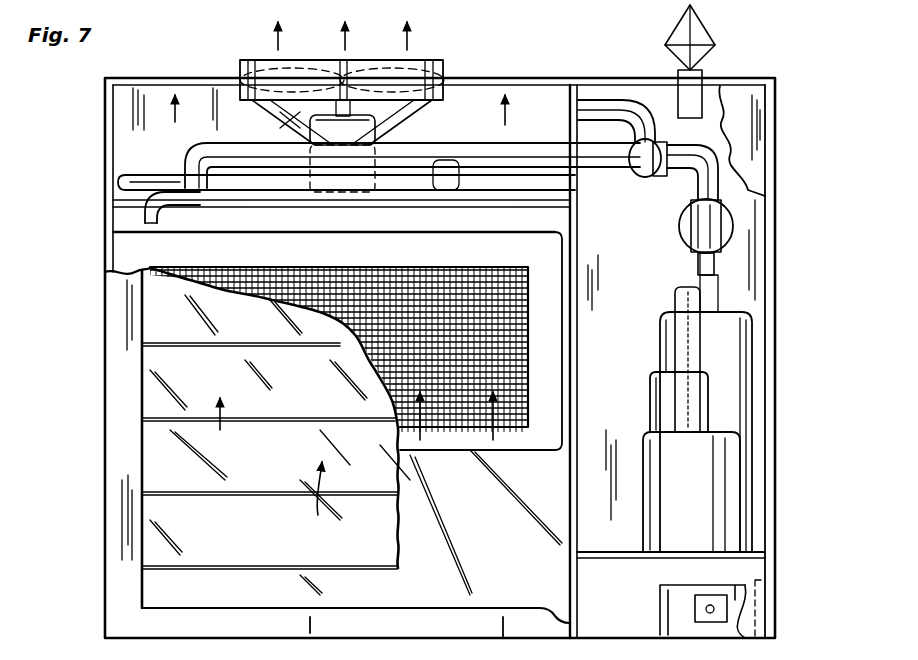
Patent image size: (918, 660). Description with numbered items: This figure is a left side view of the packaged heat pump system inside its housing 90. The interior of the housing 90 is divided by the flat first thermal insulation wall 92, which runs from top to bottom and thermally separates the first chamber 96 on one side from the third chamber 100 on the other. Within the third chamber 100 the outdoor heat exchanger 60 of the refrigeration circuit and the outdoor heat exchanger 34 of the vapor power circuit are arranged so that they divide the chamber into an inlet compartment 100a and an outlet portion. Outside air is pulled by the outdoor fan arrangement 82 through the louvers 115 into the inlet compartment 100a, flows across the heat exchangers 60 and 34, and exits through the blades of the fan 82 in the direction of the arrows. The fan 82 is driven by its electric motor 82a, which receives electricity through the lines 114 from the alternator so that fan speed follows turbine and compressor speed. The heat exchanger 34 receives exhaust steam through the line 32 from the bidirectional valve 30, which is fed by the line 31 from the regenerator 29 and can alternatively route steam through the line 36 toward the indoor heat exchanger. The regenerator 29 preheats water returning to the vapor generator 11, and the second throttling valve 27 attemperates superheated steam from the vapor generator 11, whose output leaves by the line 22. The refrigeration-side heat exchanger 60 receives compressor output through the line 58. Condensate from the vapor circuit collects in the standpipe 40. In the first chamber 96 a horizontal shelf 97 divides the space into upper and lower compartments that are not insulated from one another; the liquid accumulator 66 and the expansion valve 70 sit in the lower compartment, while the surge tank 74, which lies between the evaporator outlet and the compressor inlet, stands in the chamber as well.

The housing 90 is at (760, 82).
The third chamber 100 is at (540, 98).
The inlet compartment 100a is at (500, 517).
The first thermal insulation wall 92 is at (577, 310).
The outdoor electric motor driven fan arrangement 82 is at (412, 72).
The electric motor 82a is at (378, 133).
The lines 114 is at (305, 118).
The line 32 is at (488, 150).
The outdoor heat exchanger 34 is at (156, 175).
The line 58 is at (137, 205).
The outdoor heat exchanger 60 is at (115, 226).
The louvers 115 is at (140, 407).
The line 36 is at (625, 107).
The bidirectional valve 30 is at (640, 178).
The line 31 is at (716, 158).
The regenerator 29 is at (734, 226).
The second throttling valve 27 is at (698, 232).
The line 22 is at (712, 262).
The first chamber 96 is at (745, 276).
The surge tank 74 is at (745, 363).
The standpipe 40 is at (658, 403).
The vapor generator 11 is at (696, 498).
The horizontal shelf 97 is at (614, 552).
The liquid accumulator 66 is at (678, 585).
The expansion valve 70 is at (695, 607).